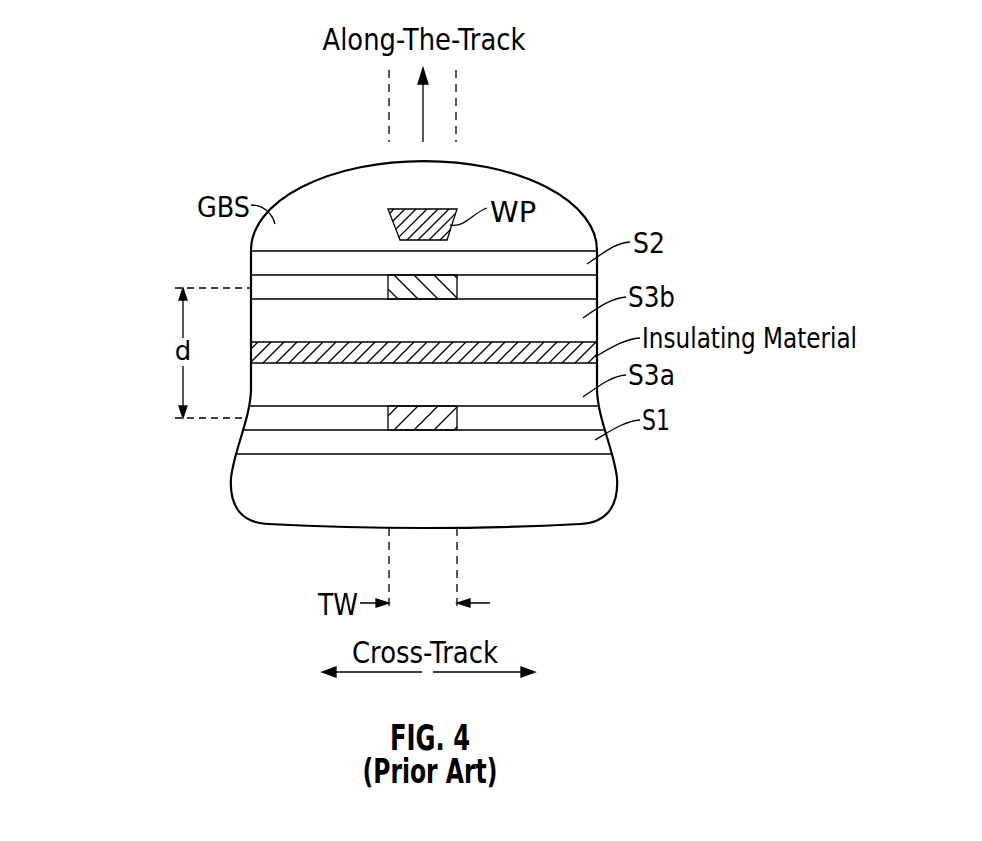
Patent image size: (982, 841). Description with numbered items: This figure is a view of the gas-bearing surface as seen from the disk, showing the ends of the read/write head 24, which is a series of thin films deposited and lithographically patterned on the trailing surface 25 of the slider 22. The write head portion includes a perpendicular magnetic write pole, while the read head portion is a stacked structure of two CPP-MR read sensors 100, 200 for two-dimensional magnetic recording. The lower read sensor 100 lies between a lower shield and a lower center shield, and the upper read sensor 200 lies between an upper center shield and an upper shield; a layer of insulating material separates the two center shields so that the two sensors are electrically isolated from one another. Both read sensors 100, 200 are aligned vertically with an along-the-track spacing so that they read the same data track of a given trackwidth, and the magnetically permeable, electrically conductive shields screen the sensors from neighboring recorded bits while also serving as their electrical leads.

The slider 22 is at (270, 511).
The read/write head 24 is at (128, 208).
The trailing surface 25 is at (280, 452).
The lower read sensor 100 is at (419, 419).
The upper read sensor 200 is at (402, 284).